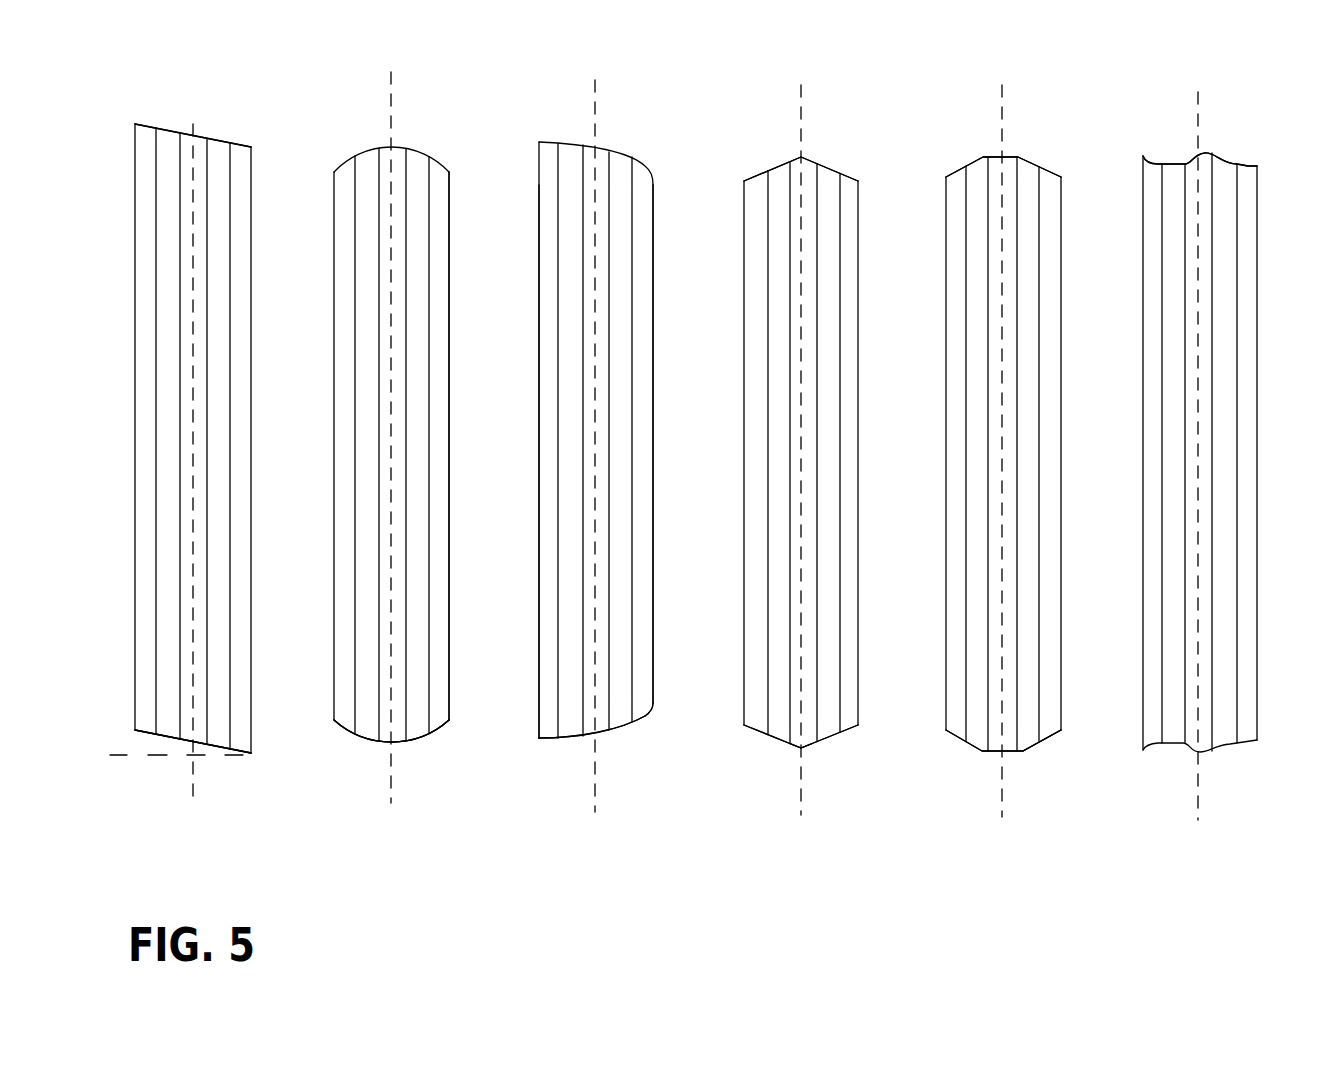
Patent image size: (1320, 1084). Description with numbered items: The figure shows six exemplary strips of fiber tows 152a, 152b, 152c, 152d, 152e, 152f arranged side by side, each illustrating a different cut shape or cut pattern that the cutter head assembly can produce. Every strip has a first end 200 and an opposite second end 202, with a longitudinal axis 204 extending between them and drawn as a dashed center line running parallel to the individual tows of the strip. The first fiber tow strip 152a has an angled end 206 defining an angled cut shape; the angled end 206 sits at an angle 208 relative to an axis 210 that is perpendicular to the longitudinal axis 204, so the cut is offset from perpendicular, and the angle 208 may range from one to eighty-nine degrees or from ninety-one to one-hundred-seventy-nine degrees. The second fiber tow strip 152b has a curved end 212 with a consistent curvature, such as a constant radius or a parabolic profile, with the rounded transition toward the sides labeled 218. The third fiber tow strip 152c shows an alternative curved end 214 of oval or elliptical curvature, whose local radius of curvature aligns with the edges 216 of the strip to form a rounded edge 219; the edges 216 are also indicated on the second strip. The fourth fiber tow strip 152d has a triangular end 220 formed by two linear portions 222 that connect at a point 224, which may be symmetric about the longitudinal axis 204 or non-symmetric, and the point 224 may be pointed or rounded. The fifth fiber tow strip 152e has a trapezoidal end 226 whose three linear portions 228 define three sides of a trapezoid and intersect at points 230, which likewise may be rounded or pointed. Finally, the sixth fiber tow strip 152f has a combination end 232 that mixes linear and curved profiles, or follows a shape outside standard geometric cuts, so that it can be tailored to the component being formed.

The first fiber tow strip 152a is at (242, 145).
The second fiber tow strip 152b is at (410, 150).
The third fiber tow strip 152c is at (626, 162).
The fourth fiber tow strip 152d is at (815, 163).
The fifth fiber tow strip 152e is at (1020, 157).
The sixth fiber tow strip 152f is at (1213, 153).
The first end 200 is at (230, 145).
The second end 202 is at (217, 748).
The longitudinal axis 204 is at (195, 795).
The angled end 206 is at (162, 128).
The angle 208 is at (148, 747).
The axis 210 is at (158, 755).
The curved end 212 is at (433, 735).
The alternative curved end 214 is at (628, 722).
The edges 216 is at (448, 472).
The transition of rounded end 218 is at (448, 715).
The rounded edge 219 is at (653, 710).
The triangular end 220 is at (850, 170).
The linear portions 222 is at (781, 740).
The point 224 is at (805, 750).
The trapezoidal end 226 is at (1042, 163).
The linear portions 228 is at (1045, 740).
The points 230 is at (980, 750).
The combination end 232 is at (1243, 160).